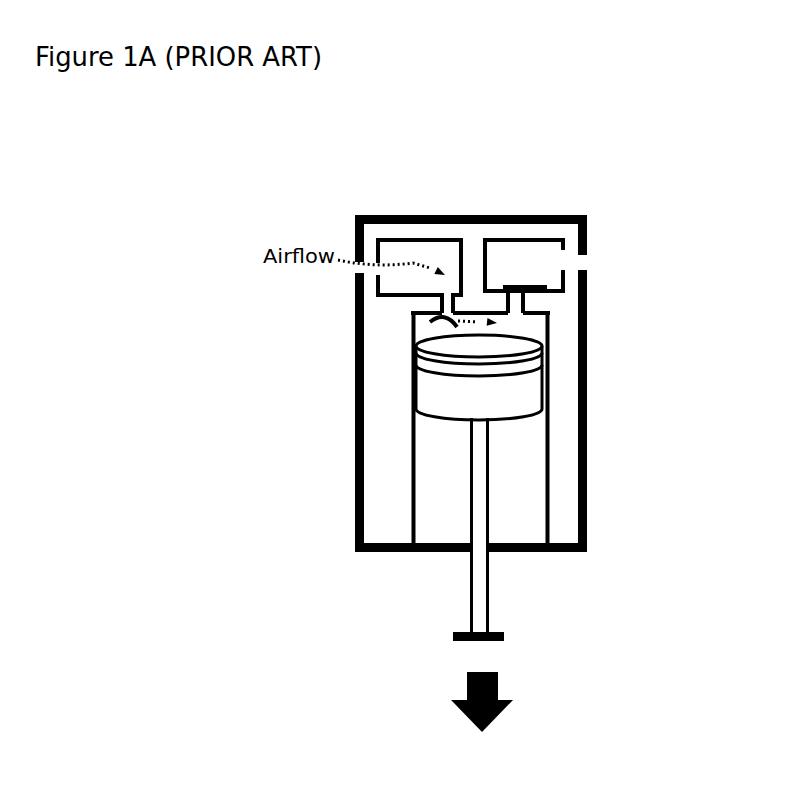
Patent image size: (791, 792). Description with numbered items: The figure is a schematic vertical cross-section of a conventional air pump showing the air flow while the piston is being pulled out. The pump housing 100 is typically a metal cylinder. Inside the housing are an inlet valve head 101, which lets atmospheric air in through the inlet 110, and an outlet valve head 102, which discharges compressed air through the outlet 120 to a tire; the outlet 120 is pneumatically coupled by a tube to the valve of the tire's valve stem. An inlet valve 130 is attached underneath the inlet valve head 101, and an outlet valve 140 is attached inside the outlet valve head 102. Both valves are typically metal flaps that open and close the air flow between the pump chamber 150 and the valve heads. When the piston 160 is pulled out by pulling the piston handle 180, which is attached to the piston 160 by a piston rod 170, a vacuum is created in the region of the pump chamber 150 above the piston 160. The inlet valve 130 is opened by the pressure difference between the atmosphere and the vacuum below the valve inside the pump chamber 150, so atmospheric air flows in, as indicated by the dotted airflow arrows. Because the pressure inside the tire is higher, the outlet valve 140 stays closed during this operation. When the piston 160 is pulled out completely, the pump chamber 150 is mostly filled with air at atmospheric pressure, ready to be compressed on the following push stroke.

The pump housing 100 is at (352, 513).
The inlet valve head 101 is at (425, 226).
The outlet valve head 102 is at (503, 226).
The inlet 110 is at (352, 278).
The outlet 120 is at (593, 255).
The inlet valve 130 is at (434, 321).
The outlet valve 140 is at (550, 283).
The pump chamber 150 is at (556, 495).
The piston 160 is at (525, 393).
The piston rod 170 is at (498, 523).
The piston handle 180 is at (513, 633).